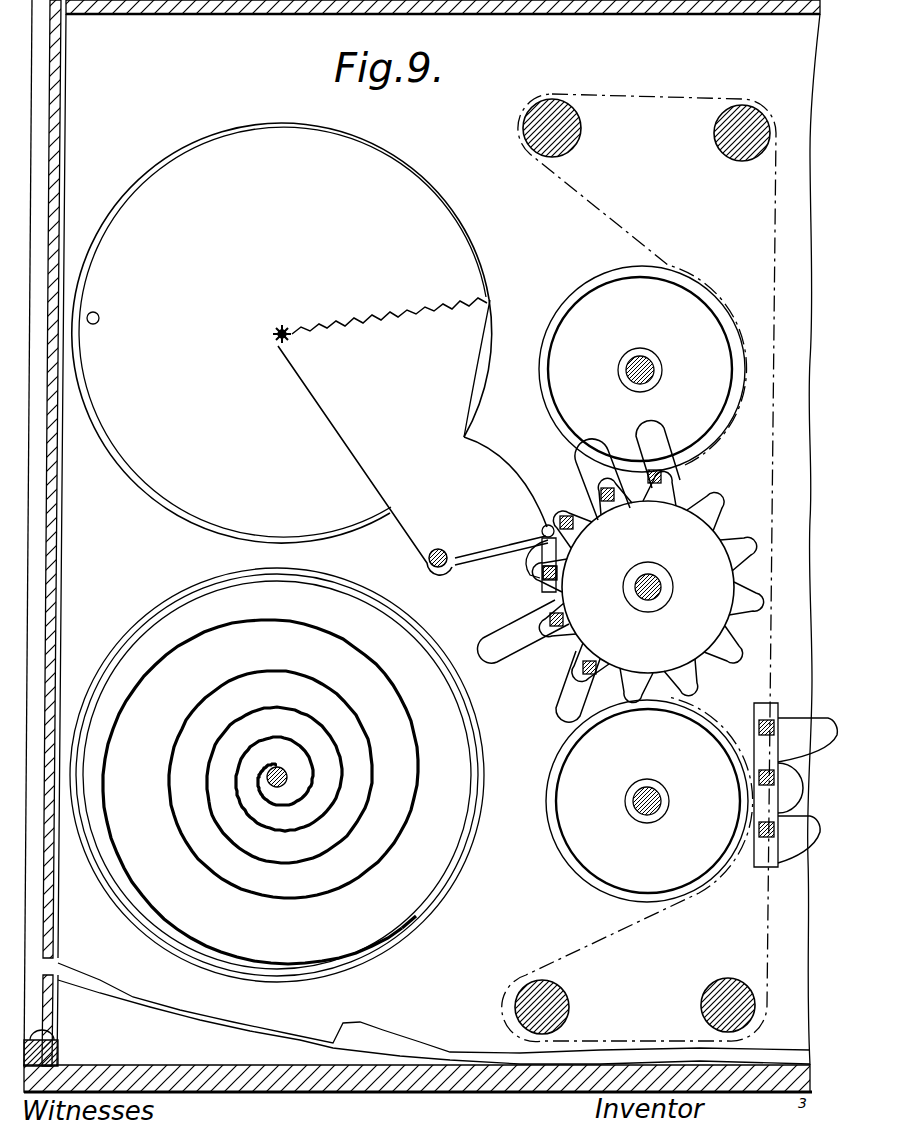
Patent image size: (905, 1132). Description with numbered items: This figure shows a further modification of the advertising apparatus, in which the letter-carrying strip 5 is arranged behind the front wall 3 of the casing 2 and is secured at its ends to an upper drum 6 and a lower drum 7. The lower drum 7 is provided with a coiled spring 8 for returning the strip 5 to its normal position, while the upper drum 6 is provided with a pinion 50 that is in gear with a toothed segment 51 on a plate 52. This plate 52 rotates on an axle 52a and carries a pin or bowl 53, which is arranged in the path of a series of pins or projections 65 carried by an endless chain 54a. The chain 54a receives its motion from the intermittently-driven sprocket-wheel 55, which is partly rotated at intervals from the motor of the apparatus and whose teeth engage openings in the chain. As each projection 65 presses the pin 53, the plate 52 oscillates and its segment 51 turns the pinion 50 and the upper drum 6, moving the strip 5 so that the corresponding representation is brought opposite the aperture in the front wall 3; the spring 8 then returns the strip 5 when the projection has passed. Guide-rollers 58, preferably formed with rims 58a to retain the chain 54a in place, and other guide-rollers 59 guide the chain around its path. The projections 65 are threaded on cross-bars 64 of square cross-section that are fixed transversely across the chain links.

The casing 2 is at (345, 1068).
The front wall 3 is at (50, 630).
The strip 5 is at (66, 572).
The upper drum 6 is at (282, 333).
The lower drum 7 is at (277, 775).
The coiled spring 8 is at (418, 786).
The pinion 50 is at (276, 334).
The toothed segment 51 is at (384, 308).
The oscillating plate 52 is at (413, 460).
The axle 52a is at (447, 566).
The pin or bowl 53 is at (542, 530).
The endless chain 54a is at (626, 926).
The sprocket-wheel 55 is at (648, 587).
The guide-roller 58 is at (644, 585).
The rim 58a is at (574, 888).
The guide-roller 59 is at (570, 140).
The cross-bar 64 is at (582, 524).
The pin or projection 65 is at (590, 462).